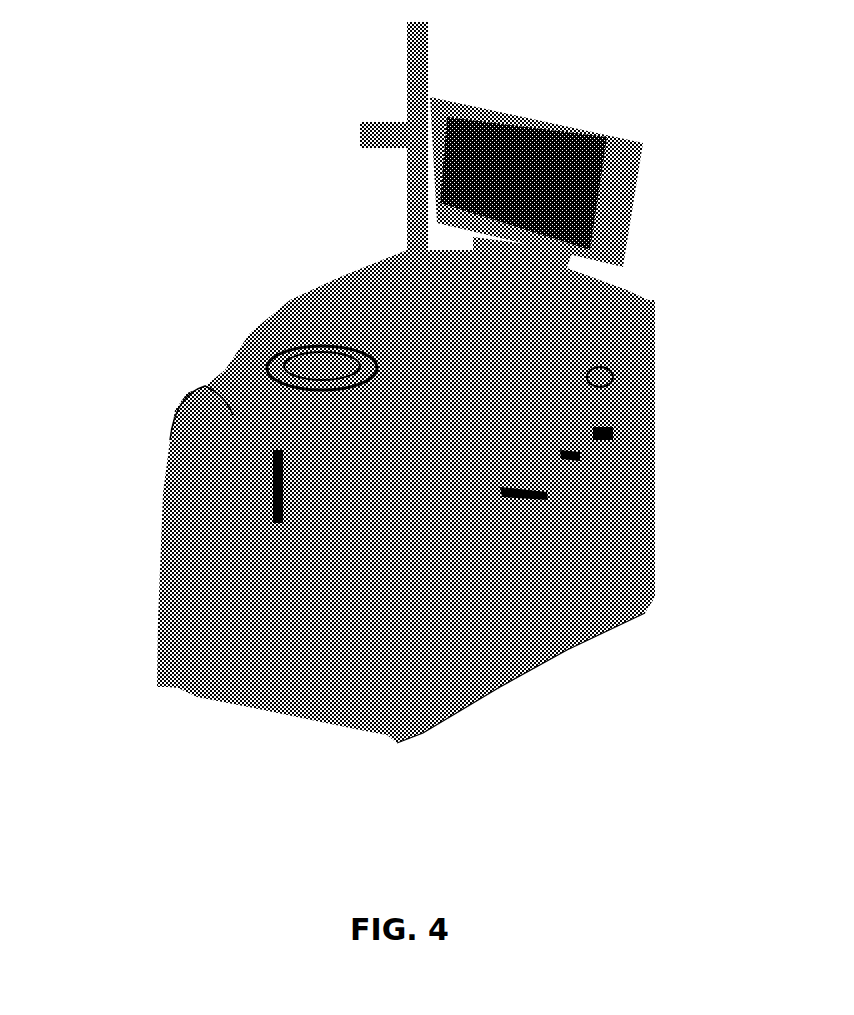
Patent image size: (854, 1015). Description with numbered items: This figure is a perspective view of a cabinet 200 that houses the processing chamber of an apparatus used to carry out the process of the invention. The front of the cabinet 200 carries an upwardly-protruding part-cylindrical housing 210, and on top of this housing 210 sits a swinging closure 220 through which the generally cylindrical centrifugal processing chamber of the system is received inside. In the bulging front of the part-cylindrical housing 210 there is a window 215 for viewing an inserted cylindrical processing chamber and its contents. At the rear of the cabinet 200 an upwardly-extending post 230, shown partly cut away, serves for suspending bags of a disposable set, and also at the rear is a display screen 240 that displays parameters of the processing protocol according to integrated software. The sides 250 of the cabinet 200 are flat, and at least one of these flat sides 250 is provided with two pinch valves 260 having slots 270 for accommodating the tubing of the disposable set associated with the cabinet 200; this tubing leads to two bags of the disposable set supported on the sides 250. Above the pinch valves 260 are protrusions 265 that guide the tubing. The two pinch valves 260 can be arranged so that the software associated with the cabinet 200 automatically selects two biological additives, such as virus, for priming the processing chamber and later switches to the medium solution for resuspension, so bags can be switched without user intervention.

The cabinet 200 is at (160, 613).
The part-cylindrical housing 210 is at (227, 410).
The window 215 is at (263, 473).
The swinging closure 220 is at (295, 350).
The support pole 230 is at (405, 66).
The display screen 240 is at (533, 120).
The sides 250 is at (530, 630).
The pinch valves 260 is at (530, 493).
The protrusions 265 is at (607, 380).
The slots 270 is at (582, 432).